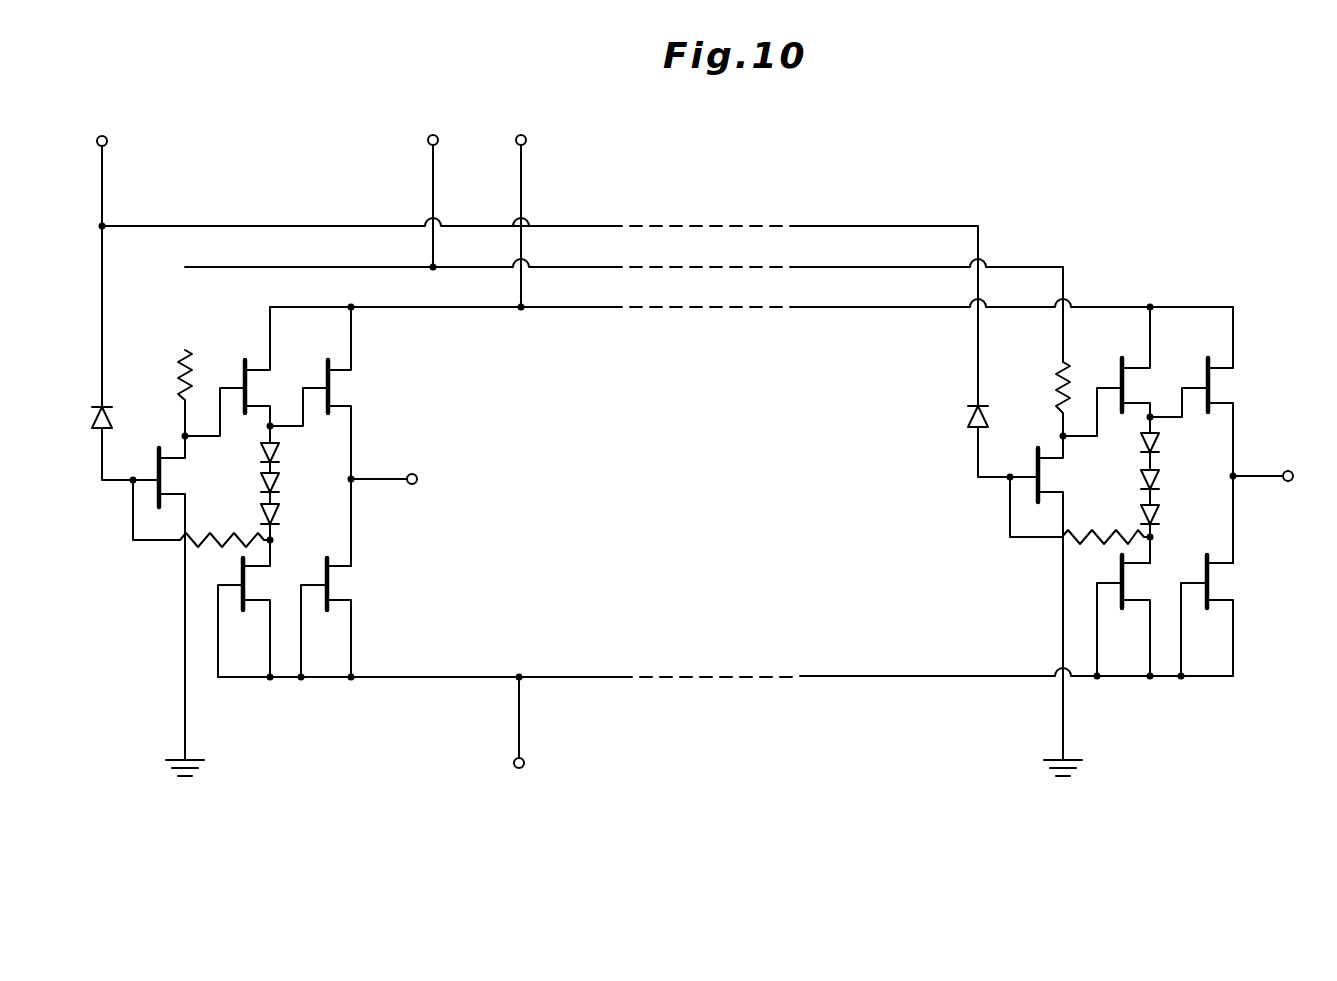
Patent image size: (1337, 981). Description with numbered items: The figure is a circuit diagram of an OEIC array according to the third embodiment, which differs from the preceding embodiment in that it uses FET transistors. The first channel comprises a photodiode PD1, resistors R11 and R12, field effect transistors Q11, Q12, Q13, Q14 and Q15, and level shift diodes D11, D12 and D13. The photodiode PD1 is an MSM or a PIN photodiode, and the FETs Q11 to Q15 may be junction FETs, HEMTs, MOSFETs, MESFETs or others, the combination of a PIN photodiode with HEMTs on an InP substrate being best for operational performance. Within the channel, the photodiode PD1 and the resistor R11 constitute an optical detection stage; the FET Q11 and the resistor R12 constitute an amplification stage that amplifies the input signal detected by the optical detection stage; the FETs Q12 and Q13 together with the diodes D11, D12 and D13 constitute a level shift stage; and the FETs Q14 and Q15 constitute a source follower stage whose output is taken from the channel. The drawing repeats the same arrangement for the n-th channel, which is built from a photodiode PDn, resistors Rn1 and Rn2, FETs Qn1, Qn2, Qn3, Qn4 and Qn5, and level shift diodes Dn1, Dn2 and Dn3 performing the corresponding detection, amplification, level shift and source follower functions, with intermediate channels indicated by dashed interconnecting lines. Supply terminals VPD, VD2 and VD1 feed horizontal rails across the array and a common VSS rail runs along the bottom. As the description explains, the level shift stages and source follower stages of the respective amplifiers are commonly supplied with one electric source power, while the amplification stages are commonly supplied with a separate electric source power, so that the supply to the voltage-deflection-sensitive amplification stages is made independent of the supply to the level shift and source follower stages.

The photodiode bias supply terminal VPD is at (532, 258).
The second supply voltage terminal VD2 is at (624, 235).
The first supply voltage terminal VD1 is at (751, 209).
The ground supply terminal VSS is at (725, 737).
The photodiode PD1 is at (89, 444).
The resistor R12 is at (192, 404).
The resistor R11 is at (203, 513).
The field effect transistor Q11 is at (175, 612).
The field effect transistor Q12 is at (269, 375).
The field effect transistor Q13 is at (256, 617).
The field effect transistor Q14 is at (325, 436).
The field effect transistor Q15 is at (340, 617).
The level shift diode D11 is at (291, 455).
The level shift diode D12 is at (291, 480).
The level shift diode D13 is at (291, 529).
The photodiode of n-th cell PDn is at (964, 442).
The load resistor of n-th cell Rn2 is at (1069, 410).
The feedback resistor of n-th cell Rn1 is at (1082, 510).
The input transistor of n-th cell Qn1 is at (1055, 612).
The transistor of n-th cell Qn2 is at (1148, 370).
The transistor of n-th cell Qn3 is at (1136, 615).
The output transistor of n-th cell Qn4 is at (1208, 435).
The transistor of n-th cell Qn5 is at (1223, 615).
The level shift diode of n-th cell Dn1 is at (1170, 446).
The level shift diode of n-th cell Dn2 is at (1170, 473).
The level shift diode of n-th cell Dn3 is at (1170, 526).